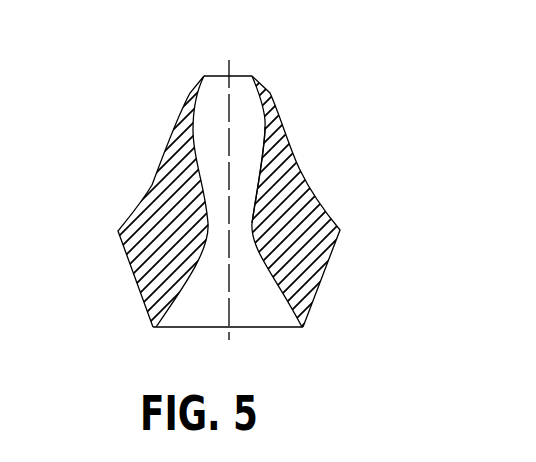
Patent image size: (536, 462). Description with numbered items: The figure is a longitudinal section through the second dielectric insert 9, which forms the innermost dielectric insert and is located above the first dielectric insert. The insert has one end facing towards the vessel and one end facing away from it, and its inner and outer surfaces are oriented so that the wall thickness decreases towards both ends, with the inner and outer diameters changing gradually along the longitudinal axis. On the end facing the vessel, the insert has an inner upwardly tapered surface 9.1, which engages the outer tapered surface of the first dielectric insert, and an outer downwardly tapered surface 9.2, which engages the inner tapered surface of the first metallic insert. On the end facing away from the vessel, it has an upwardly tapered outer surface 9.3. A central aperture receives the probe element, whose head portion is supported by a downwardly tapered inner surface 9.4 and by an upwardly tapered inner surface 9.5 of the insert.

The second dielectric insert 9 is at (123, 121).
The inner upwardly tapered surface 9.1 is at (173, 300).
The outer downwardly tapered surface 9.2 is at (130, 269).
The upwardly tapered outer surface 9.3 is at (291, 155).
The downwardly tapered inner surface 9.4 is at (200, 203).
The upwardly tapered inner surface 9.5 is at (197, 105).